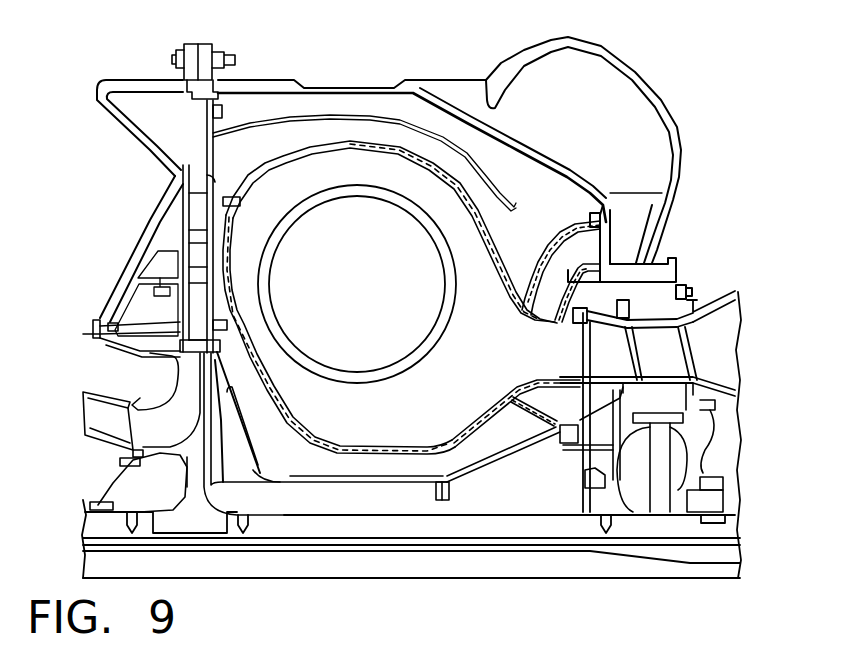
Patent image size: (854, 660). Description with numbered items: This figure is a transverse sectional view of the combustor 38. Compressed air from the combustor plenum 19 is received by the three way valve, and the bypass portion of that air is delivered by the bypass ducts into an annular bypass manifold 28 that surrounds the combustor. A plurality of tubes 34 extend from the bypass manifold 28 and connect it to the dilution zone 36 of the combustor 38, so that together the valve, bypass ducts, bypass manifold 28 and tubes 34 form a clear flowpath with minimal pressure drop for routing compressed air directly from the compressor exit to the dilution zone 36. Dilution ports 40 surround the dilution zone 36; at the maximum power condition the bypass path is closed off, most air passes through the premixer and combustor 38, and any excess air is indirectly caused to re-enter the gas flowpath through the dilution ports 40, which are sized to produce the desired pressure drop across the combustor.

The combustor plenum 19 is at (394, 78).
The annular bypass manifold 28 is at (628, 95).
The tubes 34 is at (577, 240).
The dilution zone 36 is at (579, 363).
The combustor 38 is at (505, 36).
The dilution ports 40 is at (550, 380).